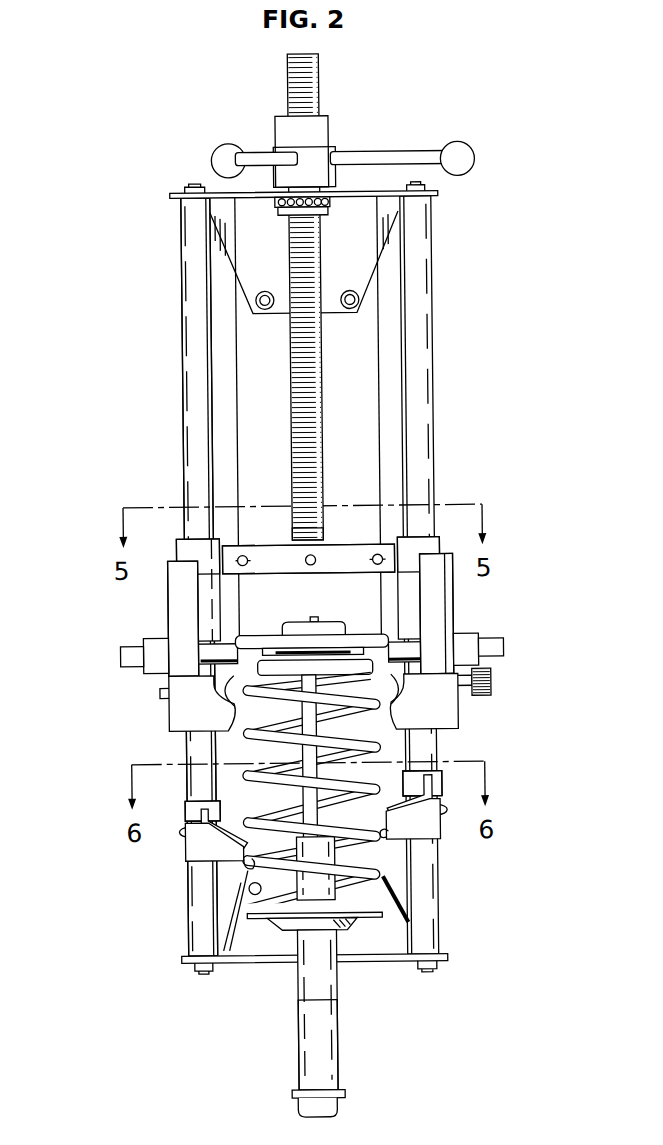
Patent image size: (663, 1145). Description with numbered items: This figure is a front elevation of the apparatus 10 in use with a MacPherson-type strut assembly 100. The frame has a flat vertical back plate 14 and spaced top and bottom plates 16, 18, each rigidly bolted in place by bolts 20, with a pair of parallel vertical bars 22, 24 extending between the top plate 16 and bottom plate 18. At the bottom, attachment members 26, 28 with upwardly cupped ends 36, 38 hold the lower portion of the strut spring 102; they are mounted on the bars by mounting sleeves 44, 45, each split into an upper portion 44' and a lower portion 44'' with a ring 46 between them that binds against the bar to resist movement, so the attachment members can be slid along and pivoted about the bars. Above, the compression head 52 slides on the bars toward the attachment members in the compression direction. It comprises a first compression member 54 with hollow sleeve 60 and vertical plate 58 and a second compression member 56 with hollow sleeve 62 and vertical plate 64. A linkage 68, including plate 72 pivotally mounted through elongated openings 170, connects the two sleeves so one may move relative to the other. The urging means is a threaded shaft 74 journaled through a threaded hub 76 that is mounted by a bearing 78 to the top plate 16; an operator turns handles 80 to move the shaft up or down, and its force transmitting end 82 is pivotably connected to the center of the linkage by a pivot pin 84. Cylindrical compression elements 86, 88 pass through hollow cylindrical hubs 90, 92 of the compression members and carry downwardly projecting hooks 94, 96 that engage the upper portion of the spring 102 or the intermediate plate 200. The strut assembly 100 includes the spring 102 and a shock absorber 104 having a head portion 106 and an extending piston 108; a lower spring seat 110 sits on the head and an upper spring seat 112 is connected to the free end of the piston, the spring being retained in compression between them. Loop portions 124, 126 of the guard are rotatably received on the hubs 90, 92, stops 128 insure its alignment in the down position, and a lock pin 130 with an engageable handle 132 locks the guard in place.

The apparatus 10 is at (143, 437).
The back plate 14 is at (357, 386).
The top plate 16 is at (224, 192).
The bottom plate 18 is at (258, 963).
The bolts 20 is at (265, 291).
The vertical bar 22 is at (185, 330).
The vertical bar 24 is at (435, 337).
The attachment member 26 is at (215, 850).
The attachment member 28 is at (408, 842).
The upwardly cupped end 36 is at (215, 875).
The upwardly cupped end 38 is at (412, 866).
The mounting sleeve 44 is at (183, 796).
The upper portion 44' is at (323, 800).
The lower portion 44'' is at (330, 838).
The mounting sleeve 45 is at (463, 757).
The ring 46 is at (180, 834).
The compression head 52 is at (485, 489).
The first compression member 54 is at (152, 605).
The second compression member 56 is at (468, 602).
The vertical plate 58 is at (168, 583).
The hollow sleeve 60 is at (180, 550).
The hollow sleeve 62 is at (437, 548).
The vertical plate 64 is at (453, 598).
The linkage 68 is at (258, 536).
The plate 72 is at (284, 573).
The threaded shaft 74 is at (293, 373).
The threaded hub 76 is at (315, 160).
The bearing 78 is at (337, 201).
The handles 80 is at (404, 150).
The force transmitting end 82 is at (318, 543).
The pivot pin 84 is at (318, 561).
The first compression element 86 is at (118, 654).
The second compression element 88 is at (504, 651).
The hollow cylindrical hub 90 is at (155, 673).
The hollow cylindrical hub 92 is at (479, 641).
The hook 94 is at (202, 704).
The hook 96 is at (424, 701).
The strut assembly 100 is at (278, 1039).
The spring 102 is at (345, 871).
The shock absorber 104 is at (345, 1004).
The head portion 106 is at (333, 1058).
The piston 108 is at (300, 794).
The lower spring seat 110 is at (345, 926).
The upper spring seat 112 is at (259, 641).
The loop portion 124 is at (177, 630).
The loop portion 126 is at (460, 631).
The stops 128 is at (160, 698).
The lock pin 130 is at (465, 692).
The handle 132 is at (492, 681).
The openings 170 is at (376, 553).
The intermediate plate 200 is at (326, 666).